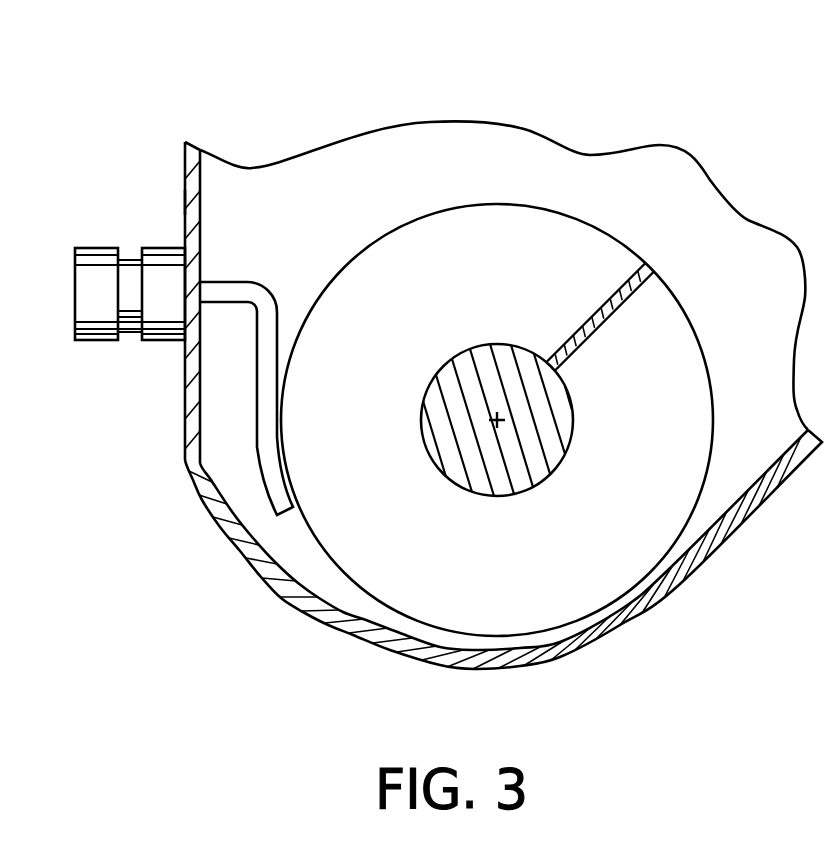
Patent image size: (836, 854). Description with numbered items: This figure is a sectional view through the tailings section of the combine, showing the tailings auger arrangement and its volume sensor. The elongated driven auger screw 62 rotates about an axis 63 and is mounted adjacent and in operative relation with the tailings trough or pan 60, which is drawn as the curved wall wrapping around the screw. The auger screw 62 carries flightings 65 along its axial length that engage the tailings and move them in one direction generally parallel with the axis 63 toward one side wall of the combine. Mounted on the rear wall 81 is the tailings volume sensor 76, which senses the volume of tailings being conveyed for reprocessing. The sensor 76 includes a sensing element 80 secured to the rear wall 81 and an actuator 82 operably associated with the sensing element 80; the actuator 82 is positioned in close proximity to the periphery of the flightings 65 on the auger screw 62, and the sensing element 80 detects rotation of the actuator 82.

The tailings pan 60 is at (289, 603).
The auger screw 62 is at (367, 190).
The axis 63 is at (497, 422).
The flightings 65 is at (526, 272).
The tailings volume sensor 76 is at (136, 174).
The sensing element 80 is at (93, 340).
The rear wall 81 is at (185, 201).
The actuator 82 is at (215, 281).